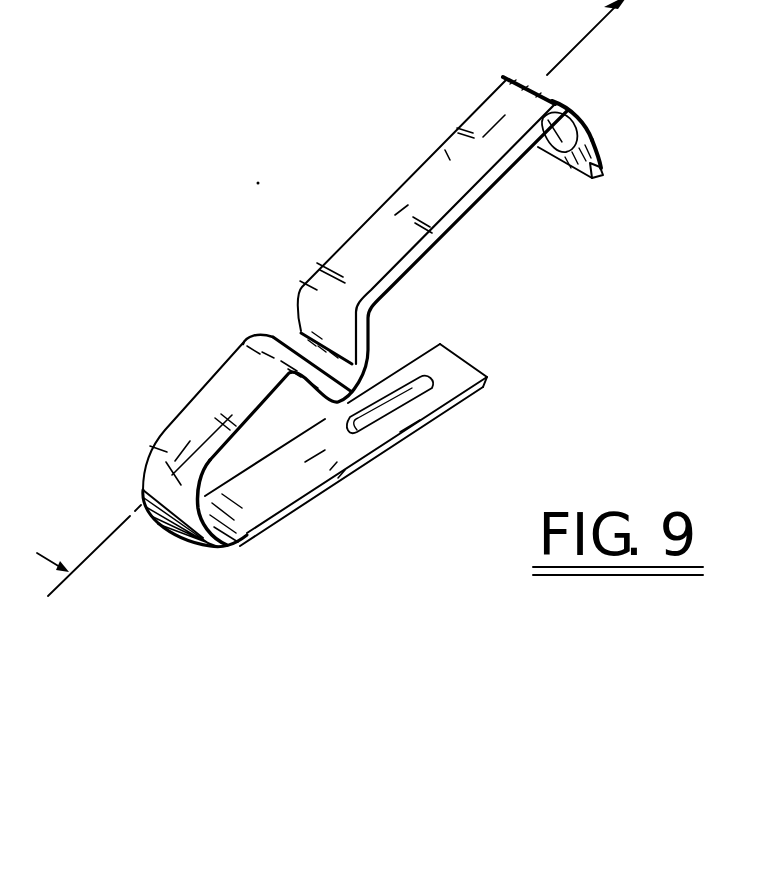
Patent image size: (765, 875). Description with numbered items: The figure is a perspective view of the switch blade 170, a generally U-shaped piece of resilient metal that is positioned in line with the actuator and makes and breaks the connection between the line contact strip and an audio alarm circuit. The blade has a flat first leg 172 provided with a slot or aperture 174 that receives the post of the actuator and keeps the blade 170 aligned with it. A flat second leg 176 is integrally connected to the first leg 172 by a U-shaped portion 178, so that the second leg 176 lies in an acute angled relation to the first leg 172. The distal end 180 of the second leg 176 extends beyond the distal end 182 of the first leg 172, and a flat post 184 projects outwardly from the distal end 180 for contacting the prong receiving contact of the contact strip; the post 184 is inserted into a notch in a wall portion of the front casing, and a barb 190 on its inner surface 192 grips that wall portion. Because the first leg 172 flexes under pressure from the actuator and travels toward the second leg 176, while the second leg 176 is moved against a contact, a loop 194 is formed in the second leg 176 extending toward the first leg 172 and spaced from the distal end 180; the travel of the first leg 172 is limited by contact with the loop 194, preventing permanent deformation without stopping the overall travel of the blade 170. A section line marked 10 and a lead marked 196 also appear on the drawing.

The section line / viewing direction 10 is at (350, 303).
The switch blade 170 is at (367, 99).
The first leg 172 is at (330, 472).
The slot or aperture 174 is at (408, 390).
The second leg 176 is at (390, 196).
The U-shaped portion 178 is at (214, 550).
The distal end of the second leg 180 is at (514, 50).
The distal end of the first leg 182 is at (443, 343).
The flat post 184 is at (586, 127).
The barb 190 is at (552, 143).
The inner surface 192 is at (595, 182).
The loop 194 is at (277, 328).
The bend 196 is at (592, 118).